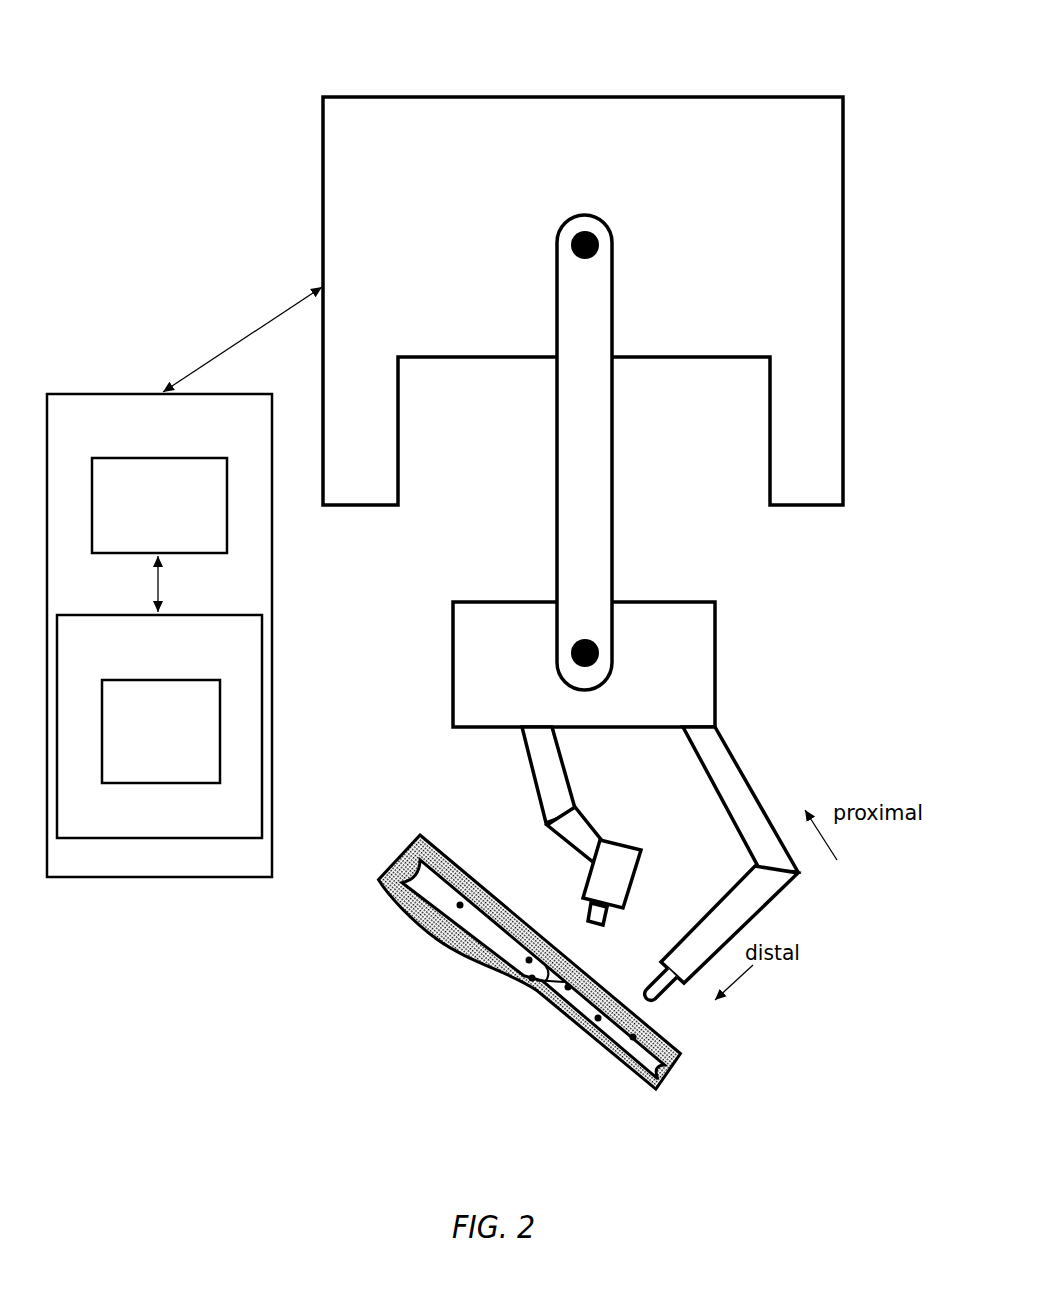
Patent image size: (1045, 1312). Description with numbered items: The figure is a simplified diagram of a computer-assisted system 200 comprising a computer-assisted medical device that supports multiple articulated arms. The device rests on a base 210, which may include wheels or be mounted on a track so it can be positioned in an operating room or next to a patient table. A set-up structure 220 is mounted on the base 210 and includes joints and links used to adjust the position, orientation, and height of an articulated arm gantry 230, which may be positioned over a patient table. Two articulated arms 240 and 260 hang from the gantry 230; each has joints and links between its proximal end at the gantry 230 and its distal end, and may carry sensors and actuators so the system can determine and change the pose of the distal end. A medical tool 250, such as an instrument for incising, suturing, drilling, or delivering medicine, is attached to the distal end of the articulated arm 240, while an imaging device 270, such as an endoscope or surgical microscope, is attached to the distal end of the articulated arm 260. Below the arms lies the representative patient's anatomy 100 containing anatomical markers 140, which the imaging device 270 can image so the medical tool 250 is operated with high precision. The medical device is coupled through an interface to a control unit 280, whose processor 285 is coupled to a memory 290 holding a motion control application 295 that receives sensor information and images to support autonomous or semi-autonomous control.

The computer-assisted system 200 is at (76, 45).
The patient's anatomy 100 is at (380, 828).
The anatomical markers 140 is at (460, 905).
The base 210 is at (790, 283).
The set-up structure 220 is at (588, 560).
The articulated arm gantry 230 is at (695, 653).
The articulated arm 240 is at (768, 802).
The medical tool 250 is at (665, 987).
The articulated arm 260 is at (585, 803).
The imaging device 270 is at (617, 867).
The control unit 280 is at (184, 582).
The processor 285 is at (159, 505).
The memory 290 is at (159, 726).
The motion control application 295 is at (161, 731).